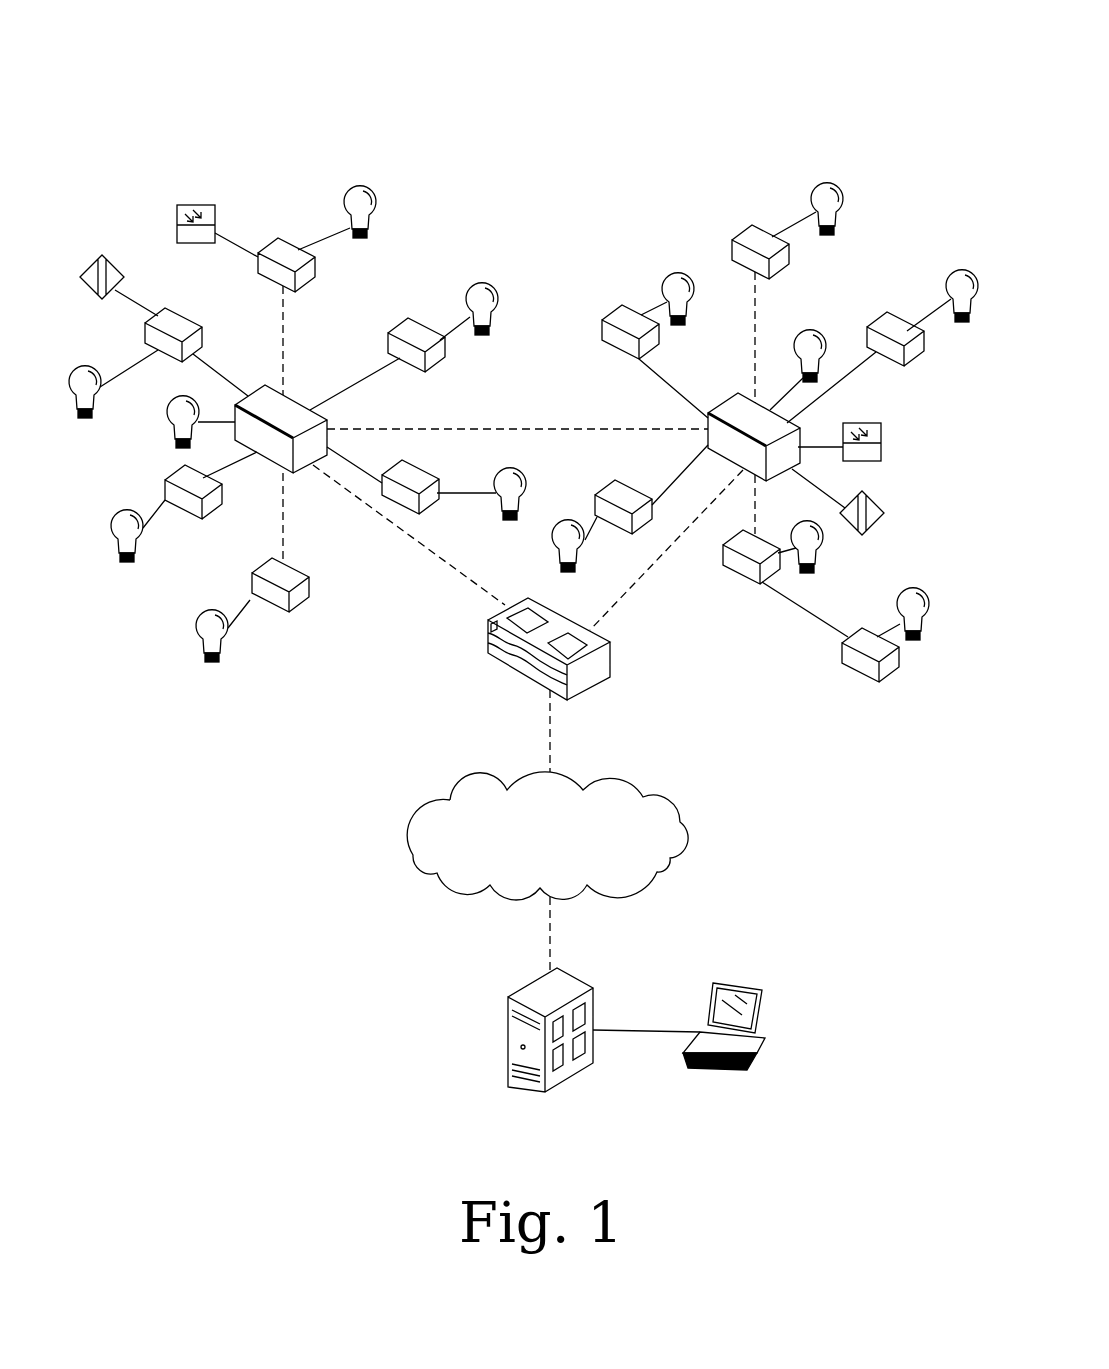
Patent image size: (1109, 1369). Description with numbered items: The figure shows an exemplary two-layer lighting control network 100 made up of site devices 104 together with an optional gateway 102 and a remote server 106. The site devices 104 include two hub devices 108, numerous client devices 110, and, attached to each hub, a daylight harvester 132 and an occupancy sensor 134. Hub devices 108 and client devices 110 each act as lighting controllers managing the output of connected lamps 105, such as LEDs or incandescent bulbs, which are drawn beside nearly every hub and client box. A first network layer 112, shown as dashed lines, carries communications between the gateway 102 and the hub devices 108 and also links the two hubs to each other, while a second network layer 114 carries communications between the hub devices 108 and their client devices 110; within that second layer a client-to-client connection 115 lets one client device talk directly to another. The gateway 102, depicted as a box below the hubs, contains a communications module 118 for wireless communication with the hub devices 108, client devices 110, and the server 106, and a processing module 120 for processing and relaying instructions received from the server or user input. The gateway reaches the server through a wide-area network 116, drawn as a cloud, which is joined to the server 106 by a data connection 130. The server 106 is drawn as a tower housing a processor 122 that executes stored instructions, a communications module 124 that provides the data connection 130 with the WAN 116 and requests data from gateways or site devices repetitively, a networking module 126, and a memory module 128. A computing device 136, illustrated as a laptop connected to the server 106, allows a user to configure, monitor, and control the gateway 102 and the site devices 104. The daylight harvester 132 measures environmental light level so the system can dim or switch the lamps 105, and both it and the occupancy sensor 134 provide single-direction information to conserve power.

The two-layer lighting control network 100 is at (667, 97).
The gateway 102 is at (545, 685).
The site devices 104 is at (529, 439).
The lamps 105 is at (360, 186).
The remote server 106 is at (543, 1053).
The hub devices 108 is at (295, 400).
The client devices 110 is at (275, 240).
The first network layer 112 is at (385, 520).
The second network layer 114 is at (223, 377).
The client-to-client connection 115 is at (827, 627).
The wide-area network (WAN) 116 is at (680, 840).
The communications module 118 is at (488, 633).
The processing module 120 is at (610, 647).
The processor 122 is at (563, 1065).
The communications module 124 is at (588, 1047).
The networking module 126 is at (585, 1015).
The memory module 128 is at (545, 1037).
The data connection 130 is at (548, 942).
The daylight harvester 132 is at (195, 205).
The occupancy sensor 134 is at (112, 263).
The computing device 136 is at (770, 1042).